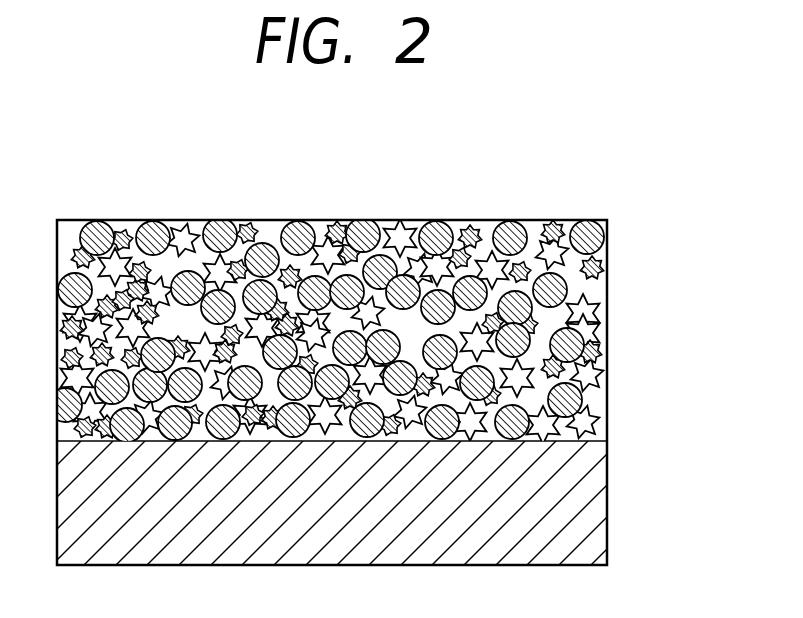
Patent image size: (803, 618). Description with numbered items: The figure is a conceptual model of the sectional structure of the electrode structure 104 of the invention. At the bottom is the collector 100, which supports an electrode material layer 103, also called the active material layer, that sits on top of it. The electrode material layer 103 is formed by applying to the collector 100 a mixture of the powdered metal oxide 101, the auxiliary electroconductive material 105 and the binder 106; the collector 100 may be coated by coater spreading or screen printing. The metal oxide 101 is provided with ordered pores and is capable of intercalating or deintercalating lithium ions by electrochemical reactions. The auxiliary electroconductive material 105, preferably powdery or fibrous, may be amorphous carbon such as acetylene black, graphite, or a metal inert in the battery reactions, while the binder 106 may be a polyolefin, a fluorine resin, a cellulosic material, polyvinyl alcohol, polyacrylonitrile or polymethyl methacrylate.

The collector 100 is at (593, 528).
The metal oxide 101 is at (298, 220).
The electrode material layer 103 is at (642, 295).
The electrode structure 104 is at (722, 373).
The auxiliary electroconductive material 105 is at (473, 220).
The binder 106 is at (407, 220).